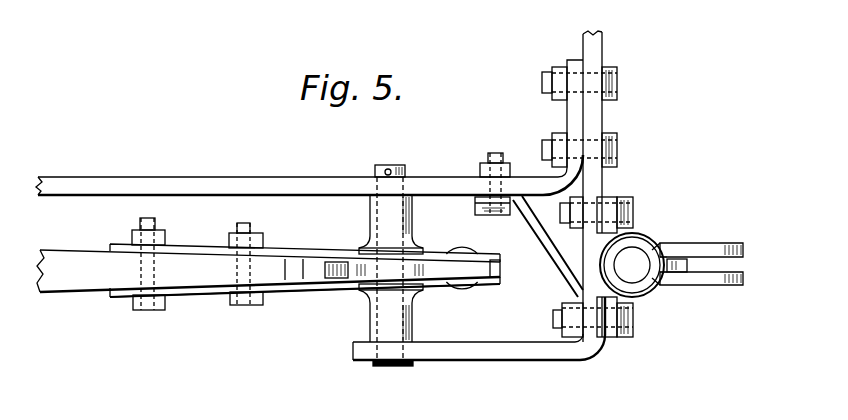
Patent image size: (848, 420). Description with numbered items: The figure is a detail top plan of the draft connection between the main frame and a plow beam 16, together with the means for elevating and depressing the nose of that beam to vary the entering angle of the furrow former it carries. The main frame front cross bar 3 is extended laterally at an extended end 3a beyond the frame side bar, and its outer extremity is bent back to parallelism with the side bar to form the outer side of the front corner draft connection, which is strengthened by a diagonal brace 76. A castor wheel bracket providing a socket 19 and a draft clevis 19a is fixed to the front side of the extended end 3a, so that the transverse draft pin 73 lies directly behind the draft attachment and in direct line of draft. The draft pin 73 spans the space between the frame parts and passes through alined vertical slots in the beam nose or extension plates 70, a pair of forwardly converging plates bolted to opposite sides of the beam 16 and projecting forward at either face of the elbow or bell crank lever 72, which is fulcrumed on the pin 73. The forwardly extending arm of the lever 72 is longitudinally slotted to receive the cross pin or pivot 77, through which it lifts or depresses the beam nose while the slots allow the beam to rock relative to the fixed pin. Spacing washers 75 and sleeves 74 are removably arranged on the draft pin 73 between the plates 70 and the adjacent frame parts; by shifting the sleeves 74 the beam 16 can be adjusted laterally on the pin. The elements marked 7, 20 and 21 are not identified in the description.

The main frame front cross bar 3 is at (594, 124).
The extended end of front cross bar 3a is at (593, 253).
The horizontal bar 7 is at (290, 177).
The plow beam 16 is at (68, 262).
The castor wheel bracket socket 19 is at (648, 300).
The draft clevis 19a is at (712, 266).
The bearing boss 20 is at (632, 265).
The bottom plate 21 is at (497, 346).
The beam nose or front extension plates 70 is at (292, 255).
The elbow or bell crank lever 72 is at (323, 280).
The transverse draft pin 73 is at (395, 166).
The spacing sleeve 74 is at (370, 202).
The spacing washer 75 is at (362, 243).
The diagonal brace 76 is at (545, 240).
The cross pin or pivot 77 is at (463, 248).